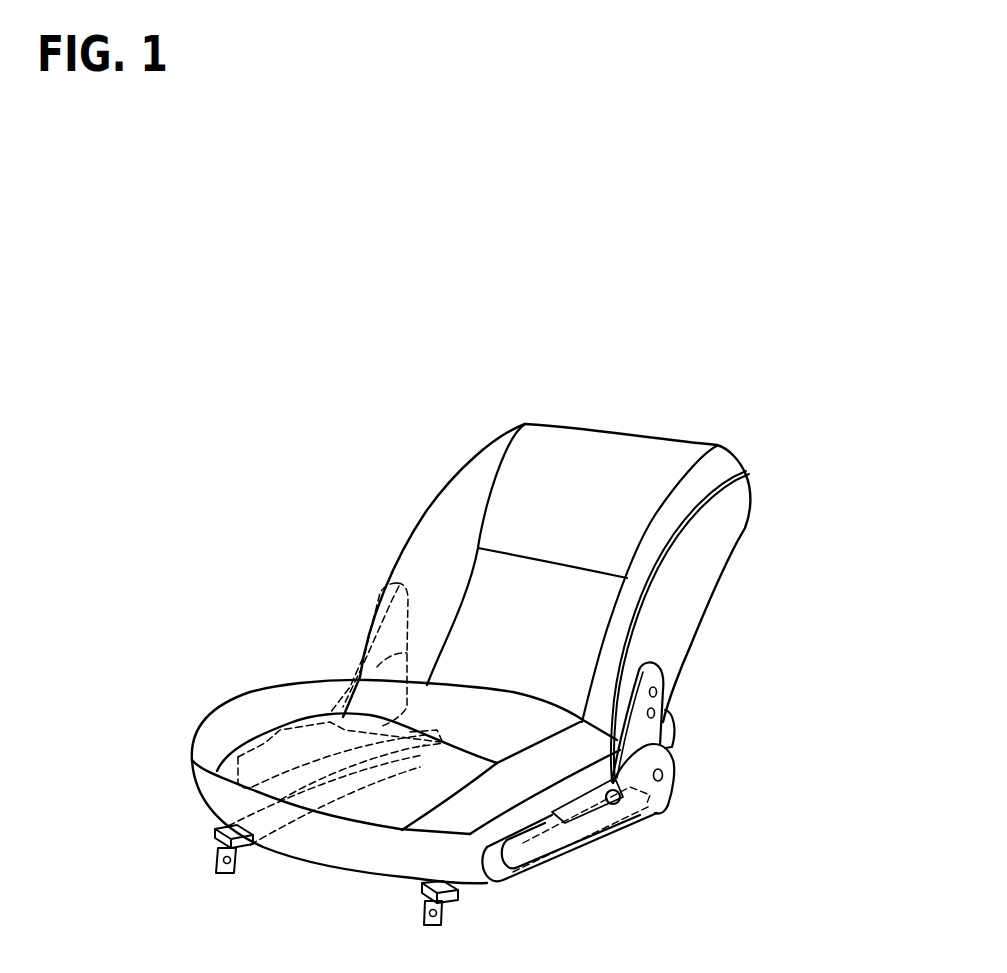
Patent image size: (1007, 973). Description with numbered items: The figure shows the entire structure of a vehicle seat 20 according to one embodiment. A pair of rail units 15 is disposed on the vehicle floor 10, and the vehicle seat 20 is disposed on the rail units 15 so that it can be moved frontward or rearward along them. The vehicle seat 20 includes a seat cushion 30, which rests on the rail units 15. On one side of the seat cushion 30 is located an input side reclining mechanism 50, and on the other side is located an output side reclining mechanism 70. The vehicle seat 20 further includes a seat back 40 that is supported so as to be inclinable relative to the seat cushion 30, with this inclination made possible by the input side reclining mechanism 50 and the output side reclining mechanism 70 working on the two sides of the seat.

The vehicle floor 10 is at (345, 937).
The rail units 15 is at (213, 835).
The vehicle seat 20 is at (767, 465).
The seat cushion 30 is at (213, 705).
The seat back 40 is at (618, 425).
The input side reclining mechanism 50 is at (678, 748).
The output side reclining mechanism 70 is at (347, 657).